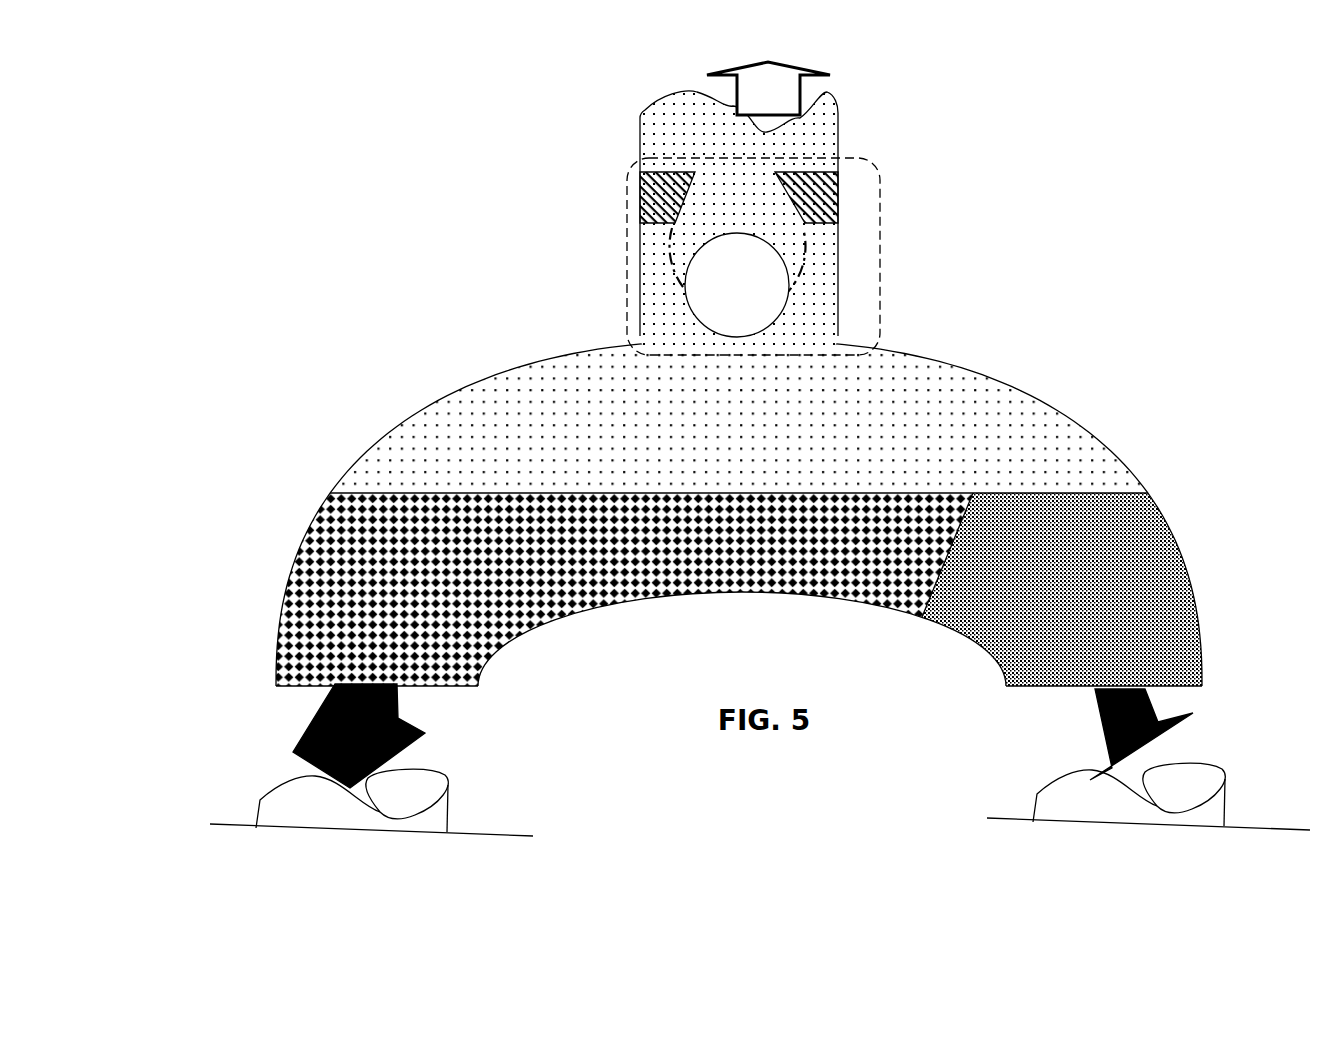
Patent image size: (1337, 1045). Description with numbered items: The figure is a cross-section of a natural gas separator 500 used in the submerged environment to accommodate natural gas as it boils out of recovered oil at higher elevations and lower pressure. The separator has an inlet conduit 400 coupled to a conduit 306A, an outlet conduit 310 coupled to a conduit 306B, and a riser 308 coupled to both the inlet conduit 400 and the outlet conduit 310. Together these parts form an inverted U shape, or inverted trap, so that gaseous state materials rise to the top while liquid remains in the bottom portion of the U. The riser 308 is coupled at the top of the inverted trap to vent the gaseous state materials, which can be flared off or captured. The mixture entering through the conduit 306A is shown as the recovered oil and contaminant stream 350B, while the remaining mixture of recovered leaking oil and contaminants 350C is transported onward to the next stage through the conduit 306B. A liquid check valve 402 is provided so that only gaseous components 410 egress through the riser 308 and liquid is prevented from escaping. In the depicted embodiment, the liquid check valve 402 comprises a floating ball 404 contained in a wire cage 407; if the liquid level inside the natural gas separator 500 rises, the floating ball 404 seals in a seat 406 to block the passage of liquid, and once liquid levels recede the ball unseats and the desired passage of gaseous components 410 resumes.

The natural gas separator 500 is at (1271, 41).
The riser 308 is at (839, 118).
The liquid check valve 402 is at (880, 185).
The floating ball 404 is at (746, 293).
The seat 406 is at (653, 197).
The wire cage 407 is at (668, 262).
The inlet conduit 400 is at (771, 520).
The outlet conduit 310 is at (1098, 440).
The gaseous components 410 is at (652, 422).
The oil, natural gas and water mixture region 350B is at (293, 567).
The remaining mixture of recovered leaking oil and contaminants 350C is at (1198, 637).
The conduit 306A is at (308, 818).
The conduit 306B is at (1087, 813).